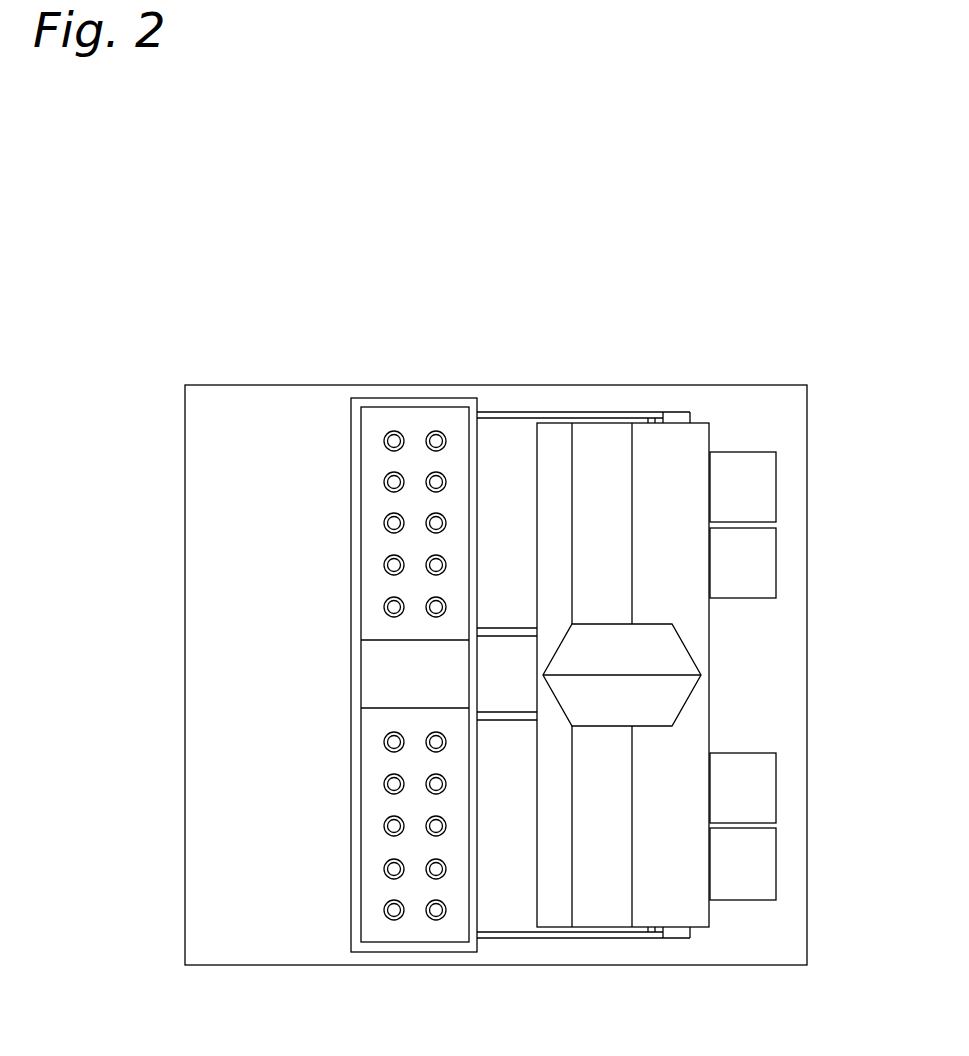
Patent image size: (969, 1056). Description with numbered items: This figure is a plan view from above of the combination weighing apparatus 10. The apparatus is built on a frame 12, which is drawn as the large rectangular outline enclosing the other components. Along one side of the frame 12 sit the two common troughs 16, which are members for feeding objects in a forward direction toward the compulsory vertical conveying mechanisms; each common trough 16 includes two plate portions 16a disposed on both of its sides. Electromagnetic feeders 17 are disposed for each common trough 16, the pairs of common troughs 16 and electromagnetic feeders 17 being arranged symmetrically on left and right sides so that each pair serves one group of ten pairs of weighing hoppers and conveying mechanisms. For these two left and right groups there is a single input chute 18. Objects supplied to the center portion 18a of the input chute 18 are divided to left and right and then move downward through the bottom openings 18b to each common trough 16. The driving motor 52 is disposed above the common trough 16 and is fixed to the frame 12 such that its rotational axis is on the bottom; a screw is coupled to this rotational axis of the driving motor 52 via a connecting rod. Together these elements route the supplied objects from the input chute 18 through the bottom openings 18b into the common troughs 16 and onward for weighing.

The combination weighing apparatus 10 is at (653, 305).
The frame 12 is at (410, 385).
The common trough 16 is at (617, 411).
The plate portion 16a is at (510, 428).
The electromagnetic feeder 17 is at (762, 565).
The input chute 18 is at (710, 712).
The center portion 18a is at (657, 655).
The bottom opening 18b is at (619, 497).
The driving motor 52 is at (390, 920).